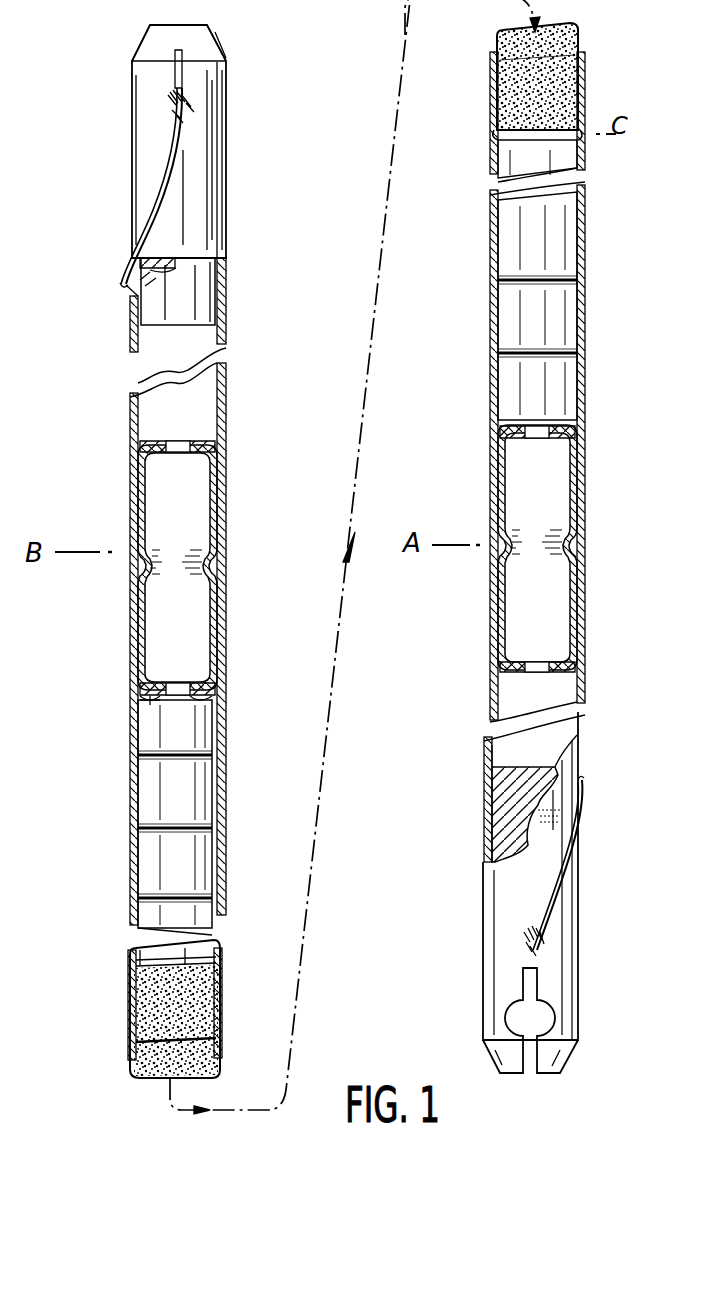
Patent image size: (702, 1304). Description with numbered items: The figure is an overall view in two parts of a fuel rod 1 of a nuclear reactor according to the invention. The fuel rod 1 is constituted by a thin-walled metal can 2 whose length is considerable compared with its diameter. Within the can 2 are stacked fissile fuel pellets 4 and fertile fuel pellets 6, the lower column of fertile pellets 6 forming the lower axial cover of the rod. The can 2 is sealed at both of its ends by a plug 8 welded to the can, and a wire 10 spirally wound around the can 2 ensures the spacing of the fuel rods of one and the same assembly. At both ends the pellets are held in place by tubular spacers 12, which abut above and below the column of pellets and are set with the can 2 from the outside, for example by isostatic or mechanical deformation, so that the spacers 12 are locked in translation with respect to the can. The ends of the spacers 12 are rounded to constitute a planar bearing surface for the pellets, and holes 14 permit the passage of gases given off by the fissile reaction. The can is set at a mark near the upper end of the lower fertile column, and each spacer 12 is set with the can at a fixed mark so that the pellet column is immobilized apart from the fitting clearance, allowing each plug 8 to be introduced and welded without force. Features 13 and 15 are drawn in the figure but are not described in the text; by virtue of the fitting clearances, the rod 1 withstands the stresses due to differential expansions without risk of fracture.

The fuel rod 1 is at (104, 362).
The thin-walled metal can 2 is at (128, 419).
The fissile fuel pellets 4 is at (516, 92).
The fertile fuel pellets 6 is at (190, 838).
The plug 8 is at (200, 244).
The wire 10 is at (535, 916).
The tubular spacer 12 is at (217, 503).
The rim of housing 13 is at (486, 131).
The holes 14 is at (178, 450).
The contact spring 15 is at (140, 700).